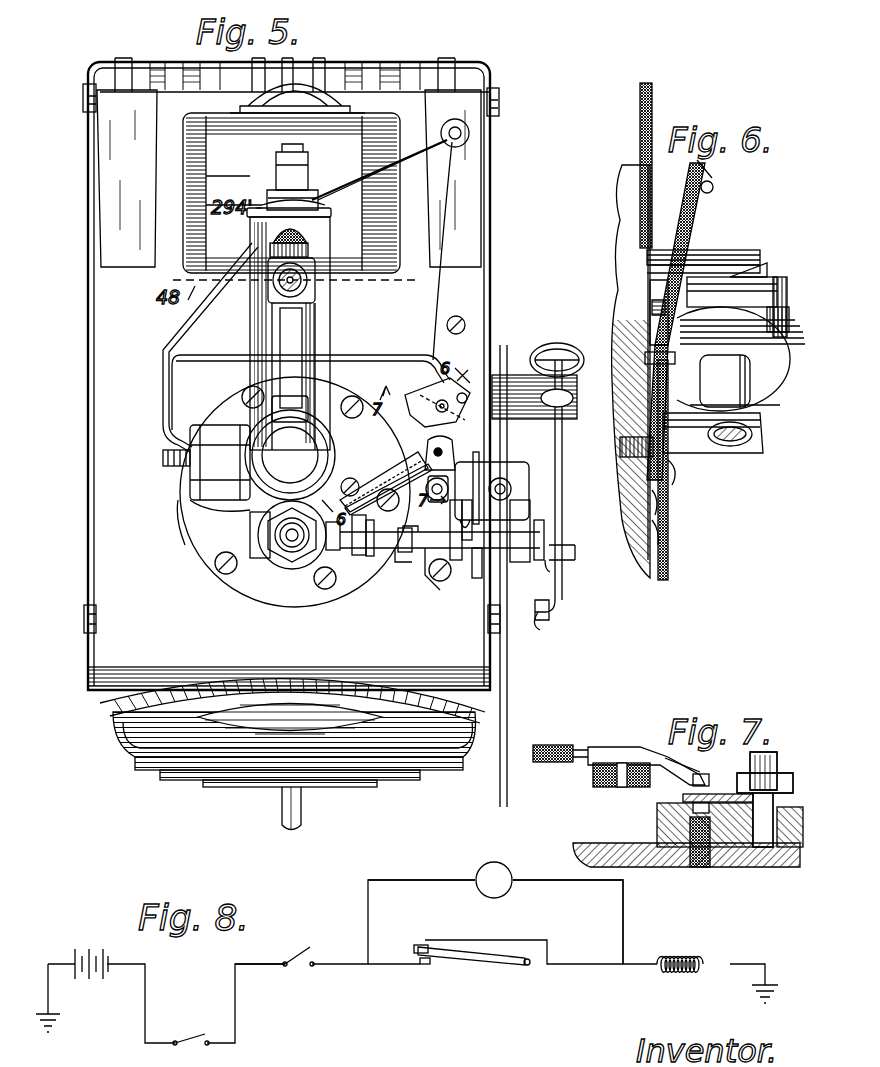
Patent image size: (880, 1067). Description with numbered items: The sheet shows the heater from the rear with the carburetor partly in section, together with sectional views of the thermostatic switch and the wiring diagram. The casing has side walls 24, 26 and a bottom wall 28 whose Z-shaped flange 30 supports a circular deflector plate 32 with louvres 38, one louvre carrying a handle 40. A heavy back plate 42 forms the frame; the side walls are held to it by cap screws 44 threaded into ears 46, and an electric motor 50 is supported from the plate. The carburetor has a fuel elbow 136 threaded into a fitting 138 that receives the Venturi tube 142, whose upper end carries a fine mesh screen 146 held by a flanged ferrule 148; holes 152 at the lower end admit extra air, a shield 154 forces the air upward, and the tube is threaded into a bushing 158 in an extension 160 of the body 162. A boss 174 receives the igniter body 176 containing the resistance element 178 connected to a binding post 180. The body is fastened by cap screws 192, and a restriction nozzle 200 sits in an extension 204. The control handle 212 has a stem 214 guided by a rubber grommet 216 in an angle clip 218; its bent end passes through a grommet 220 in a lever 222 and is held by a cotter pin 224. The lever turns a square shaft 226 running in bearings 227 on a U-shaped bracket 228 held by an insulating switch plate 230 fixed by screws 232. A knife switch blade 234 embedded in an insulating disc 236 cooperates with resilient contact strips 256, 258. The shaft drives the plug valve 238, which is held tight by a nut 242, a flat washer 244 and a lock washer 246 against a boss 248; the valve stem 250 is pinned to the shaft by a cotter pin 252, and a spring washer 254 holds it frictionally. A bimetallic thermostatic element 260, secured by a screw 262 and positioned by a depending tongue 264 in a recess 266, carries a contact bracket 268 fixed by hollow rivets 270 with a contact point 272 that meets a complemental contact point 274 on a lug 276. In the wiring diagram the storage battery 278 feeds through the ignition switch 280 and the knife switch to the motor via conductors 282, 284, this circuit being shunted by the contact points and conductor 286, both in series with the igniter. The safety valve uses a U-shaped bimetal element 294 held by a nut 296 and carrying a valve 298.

In FIG. 5, the side wall 24 is at (492, 148).
In FIG. 5, the side wall 26 is at (97, 198).
In FIG. 5, the bottom wall 28 is at (90, 688).
In FIG. 5, the Z-shaped flange 30 is at (100, 705).
In FIG. 5, the deflector plate 32 is at (118, 725).
In FIG. 5, the louvres 38 is at (160, 748).
In FIG. 5, the handle 40 is at (285, 815).
In FIG. 5, the back plate 42 is at (98, 262).
In FIG. 5, the cap screws 44 is at (84, 92).
In FIG. 5, the ears 46 is at (84, 104).
In FIG. 5, the electric motor 50 is at (183, 212).
In FIG. 8, the electric motor 50 is at (480, 877).
In FIG. 5, the elbow fitting 136 is at (300, 283).
In FIG. 5, the fitting 138 is at (270, 300).
In FIG. 5, the Venturi tube 142 is at (282, 322).
In FIG. 5, the fine mesh screen 146 is at (270, 246).
In FIG. 5, the flanged ferrule 148 is at (280, 258).
In FIG. 5, the holes 152 is at (290, 350).
In FIG. 5, the shield 154 is at (256, 230).
In FIG. 5, the bushing 158 is at (274, 410).
In FIG. 5, the extension 160 is at (282, 440).
In FIG. 5, the body 162 is at (205, 560).
In FIG. 6, the body 162 is at (670, 560).
In FIG. 7, the body 162 is at (752, 855).
In FIG. 5, the boss 174 is at (190, 500).
In FIG. 5, the igniter body 176 is at (190, 480).
In FIG. 8, the resistance element 178 is at (690, 975).
In FIG. 5, the binding post 180 is at (165, 450).
In FIG. 5, the cap screws 192 is at (345, 378).
In FIG. 5, the restriction nozzle 200 is at (278, 548).
In FIG. 5, the extension 204 is at (258, 528).
In FIG. 5, the handle 212 is at (557, 345).
In FIG. 6, the handle 212 is at (577, 362).
In FIG. 5, the stem 214 is at (563, 489).
In FIG. 5, the rubber grommet 216 is at (560, 345).
In FIG. 5, the angle clip 218 is at (520, 375).
In FIG. 5, the grommet 220 is at (550, 604).
In FIG. 5, the lever 222 is at (546, 561).
In FIG. 5, the cotter pin 224 is at (552, 620).
In FIG. 5, the square shaft 226 is at (546, 524).
In FIG. 5, the bearings 227 is at (428, 590).
In FIG. 6, the bearings 227 is at (768, 262).
In FIG. 5, the U-shaped bracket 228 is at (540, 542).
In FIG. 6, the U-shaped bracket 228 is at (765, 252).
In FIG. 5, the insulating switch plate 230 is at (525, 478).
In FIG. 6, the insulating switch plate 230 is at (622, 215).
In FIG. 7, the insulating switch plate 230 is at (670, 850).
In FIG. 5, the screws 232 is at (455, 575).
In FIG. 7, the screws 232 is at (670, 830).
In FIG. 5, the knife switch blade 234 is at (465, 585).
In FIG. 6, the knife switch blade 234 is at (700, 252).
In FIG. 8, the knife switch blade 234 is at (292, 952).
In FIG. 5, the disc 236 is at (478, 600).
In FIG. 6, the disc 236 is at (776, 320).
In FIG. 5, the valve 238 is at (380, 560).
In FIG. 5, the nut 242 is at (372, 565).
In FIG. 5, the flat washer 244 is at (305, 570).
In FIG. 5, the lock washer 246 is at (355, 560).
In FIG. 5, the boss 248 is at (305, 560).
In FIG. 5, the stem 250 is at (400, 560).
In FIG. 5, the cotter pin 252 is at (395, 540).
In FIG. 5, the spring washer 254 is at (405, 580).
In FIG. 5, the resilient contact strip 256 is at (515, 455).
In FIG. 6, the resilient contact strip 256 is at (770, 280).
In FIG. 8, the resilient contact strip 256 is at (258, 968).
In FIG. 5, the resilient contact strip 258 is at (462, 465).
In FIG. 6, the resilient contact strip 258 is at (772, 296).
In FIG. 8, the resilient contact strip 258 is at (335, 964).
In FIG. 5, the bimetallic thermostatic element 260 is at (395, 443).
In FIG. 6, the bimetallic thermostatic element 260 is at (650, 370).
In FIG. 8, the bimetallic thermostatic element 260 is at (498, 968).
In FIG. 5, the screw 262 is at (395, 462).
In FIG. 6, the screw 262 is at (672, 480).
In FIG. 6, the depending tongue 264 is at (672, 505).
In FIG. 6, the recess 266 is at (672, 530).
In FIG. 5, the contact bracket 268 is at (420, 385).
In FIG. 6, the contact bracket 268 is at (700, 212).
In FIG. 7, the contact bracket 268 is at (672, 770).
In FIG. 5, the hollow rivets 270 is at (418, 415).
In FIG. 6, the hollow rivets 270 is at (690, 250).
In FIG. 7, the hollow rivets 270 is at (620, 748).
In FIG. 7, the contact point 272 is at (712, 787).
In FIG. 8, the contact point 272 is at (415, 948).
In FIG. 6, the contact point 274 is at (660, 275).
In FIG. 7, the contact point 274 is at (683, 800).
In FIG. 8, the contact point 274 is at (440, 968).
In FIG. 5, the lug 276 is at (430, 460).
In FIG. 6, the lug 276 is at (658, 310).
In FIG. 7, the lug 276 is at (665, 810).
In FIG. 8, the lug 276 is at (383, 968).
In FIG. 8, the storage battery 278 is at (88, 947).
In FIG. 8, the ignition switch 280 is at (198, 1018).
In FIG. 5, the conductor 282 is at (492, 188).
In FIG. 6, the conductor 282 is at (655, 95).
In FIG. 8, the conductor 282 is at (388, 880).
In FIG. 5, the conductor 284 is at (160, 362).
In FIG. 8, the conductor 284 is at (568, 880).
In FIG. 5, the conductor 286 is at (354, 350).
In FIG. 6, the conductor 286 is at (712, 182).
In FIG. 7, the conductor 286 is at (550, 748).
In FIG. 8, the conductor 286 is at (593, 968).
In FIG. 5, the U-shaped bimetal thermostatic element 294 is at (297, 113).
In FIG. 5, the nut 296 is at (268, 203).
In FIG. 5, the valve 298 is at (278, 162).